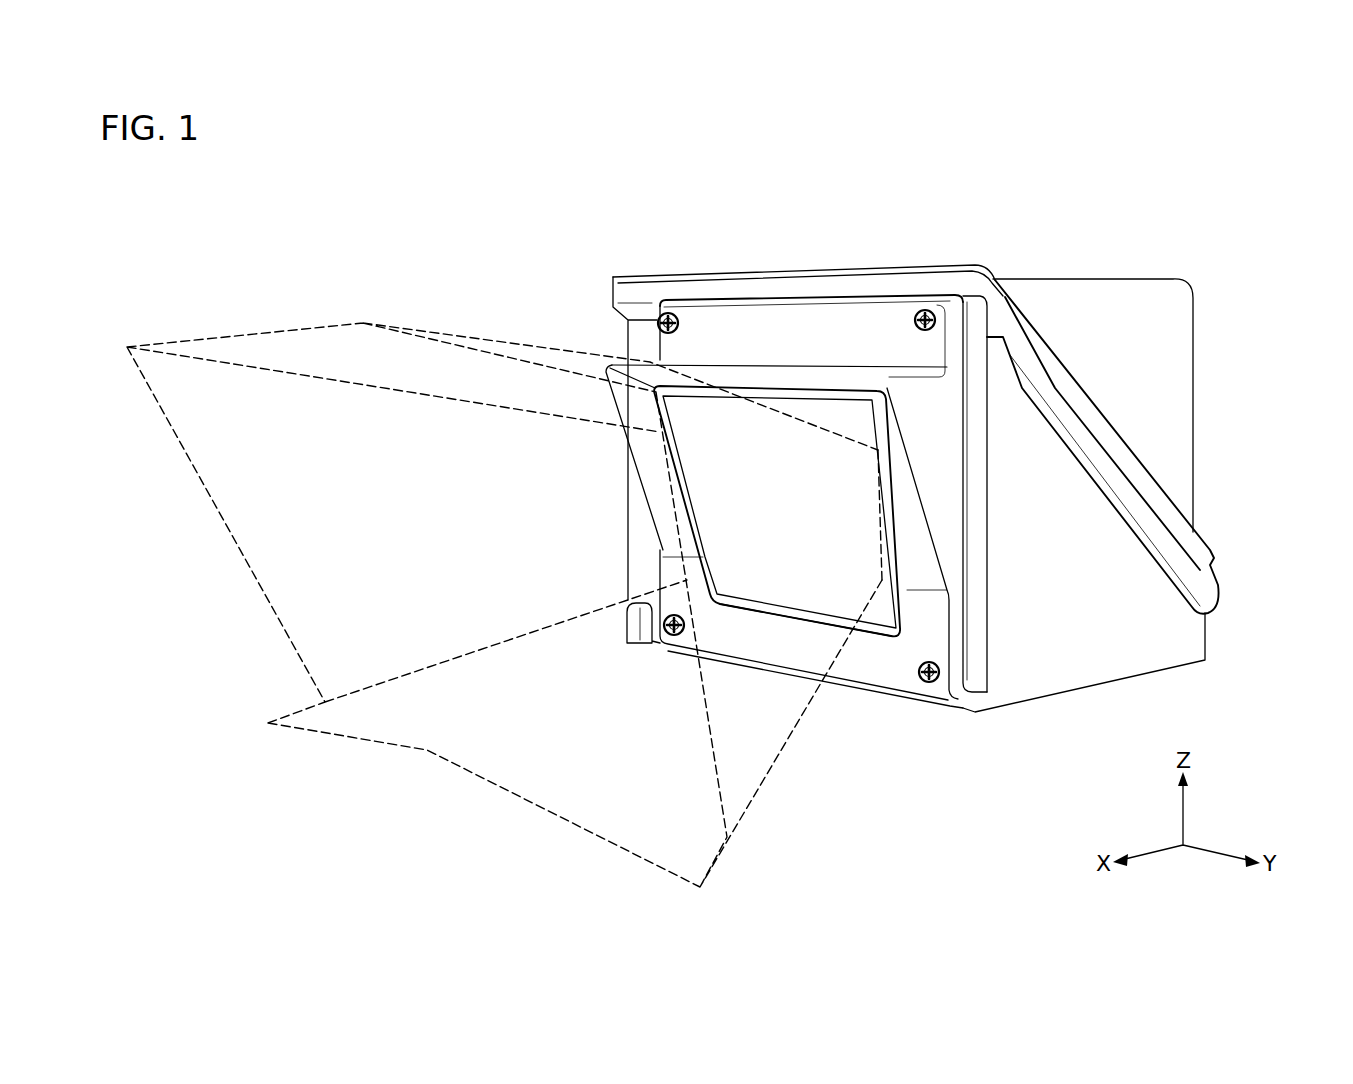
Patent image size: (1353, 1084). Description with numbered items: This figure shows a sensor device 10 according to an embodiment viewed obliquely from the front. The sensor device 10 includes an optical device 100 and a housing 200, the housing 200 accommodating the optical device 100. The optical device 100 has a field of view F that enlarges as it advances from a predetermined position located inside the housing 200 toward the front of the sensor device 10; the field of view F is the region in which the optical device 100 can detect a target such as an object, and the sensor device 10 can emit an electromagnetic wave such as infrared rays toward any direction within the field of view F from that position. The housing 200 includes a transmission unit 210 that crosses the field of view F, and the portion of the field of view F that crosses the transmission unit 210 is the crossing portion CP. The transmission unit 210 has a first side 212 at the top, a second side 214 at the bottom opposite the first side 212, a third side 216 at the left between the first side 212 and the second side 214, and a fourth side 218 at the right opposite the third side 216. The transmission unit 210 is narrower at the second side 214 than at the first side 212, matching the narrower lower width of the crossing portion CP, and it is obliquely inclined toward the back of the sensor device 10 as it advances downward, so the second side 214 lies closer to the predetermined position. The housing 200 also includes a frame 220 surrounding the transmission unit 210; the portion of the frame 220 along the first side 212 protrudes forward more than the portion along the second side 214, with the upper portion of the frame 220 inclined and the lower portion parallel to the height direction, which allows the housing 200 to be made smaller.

The sensor device 10 is at (1178, 168).
The optical device 100 is at (916, 458).
The housing 200 is at (1070, 318).
The transmission unit 210 is at (817, 410).
The first side 212 is at (837, 407).
The second side 214 is at (873, 628).
The third side 216 is at (663, 503).
The fourth side 218 is at (905, 562).
The frame 220 is at (917, 530).
The field of view F is at (300, 333).
The crossing portion CP is at (883, 500).